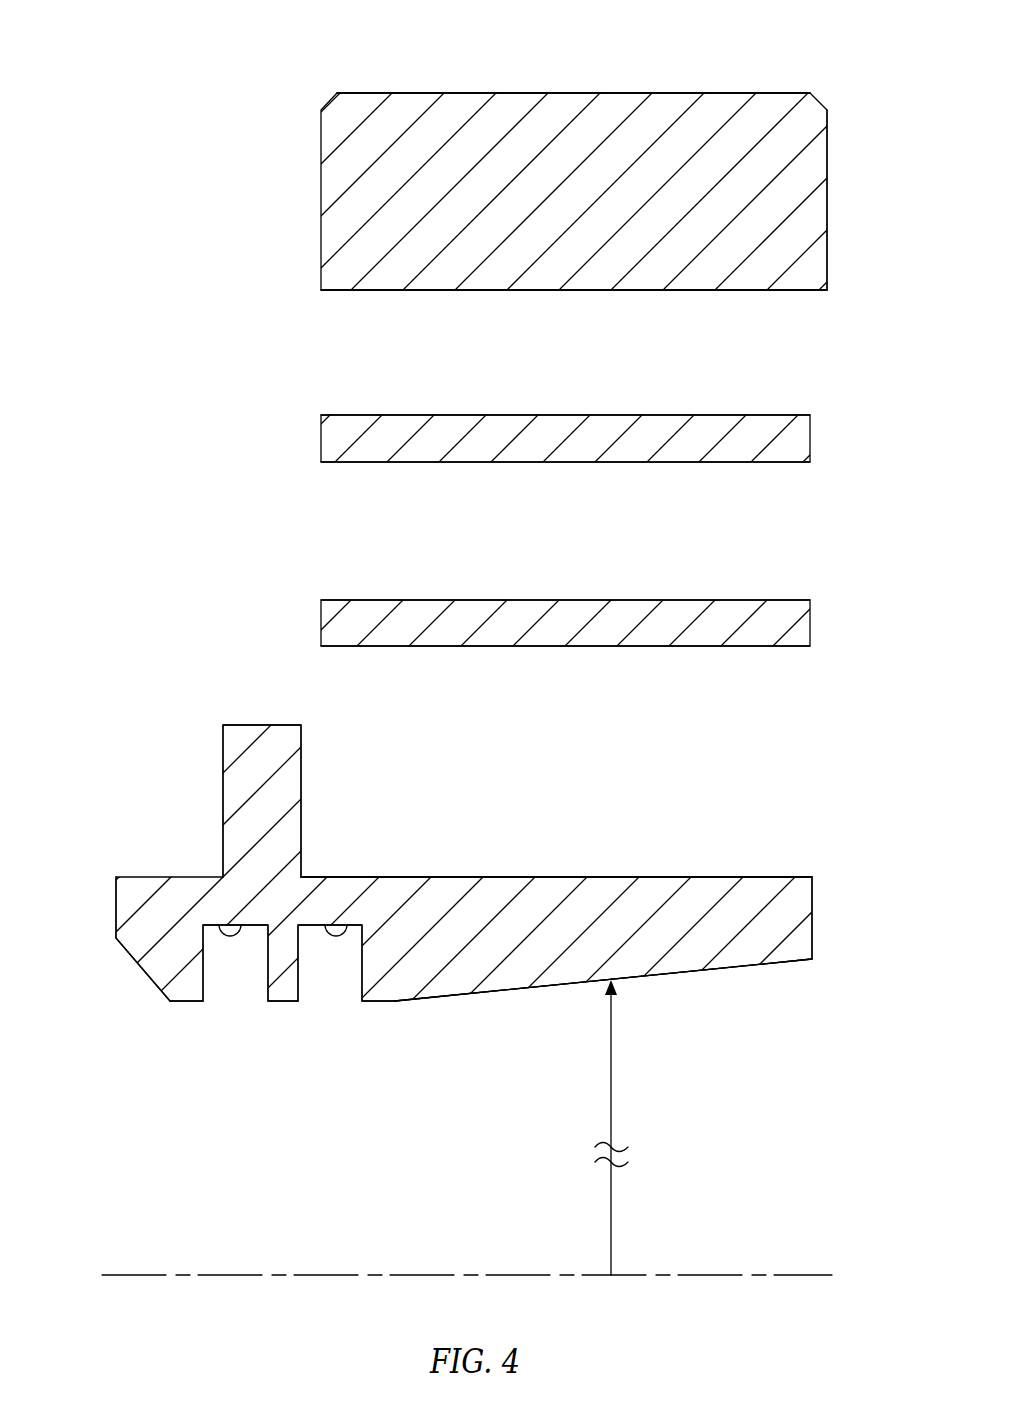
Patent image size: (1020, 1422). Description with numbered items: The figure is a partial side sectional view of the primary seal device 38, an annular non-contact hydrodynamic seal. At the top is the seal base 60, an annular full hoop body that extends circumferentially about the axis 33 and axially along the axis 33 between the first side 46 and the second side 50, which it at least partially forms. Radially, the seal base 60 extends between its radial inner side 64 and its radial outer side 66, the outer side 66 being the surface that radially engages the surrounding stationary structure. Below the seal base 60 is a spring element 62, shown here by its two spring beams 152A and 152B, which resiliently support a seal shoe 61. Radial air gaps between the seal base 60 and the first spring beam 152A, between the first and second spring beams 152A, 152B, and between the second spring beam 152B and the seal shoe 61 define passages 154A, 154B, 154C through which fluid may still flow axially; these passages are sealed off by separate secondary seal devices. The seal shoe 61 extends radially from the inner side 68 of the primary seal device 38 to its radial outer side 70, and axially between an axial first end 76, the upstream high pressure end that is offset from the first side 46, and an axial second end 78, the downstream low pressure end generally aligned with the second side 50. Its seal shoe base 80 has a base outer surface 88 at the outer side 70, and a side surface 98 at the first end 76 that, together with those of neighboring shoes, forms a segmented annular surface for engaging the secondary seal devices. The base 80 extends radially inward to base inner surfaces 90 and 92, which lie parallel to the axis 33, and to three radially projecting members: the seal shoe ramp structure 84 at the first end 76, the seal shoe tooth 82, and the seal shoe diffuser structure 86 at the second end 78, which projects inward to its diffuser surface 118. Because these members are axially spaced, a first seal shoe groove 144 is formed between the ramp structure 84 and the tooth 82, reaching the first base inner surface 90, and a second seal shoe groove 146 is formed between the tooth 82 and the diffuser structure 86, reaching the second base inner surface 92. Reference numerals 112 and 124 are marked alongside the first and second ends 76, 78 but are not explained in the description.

The primary seal device 38 is at (579, 185).
The first side 46 is at (321, 190).
The second side 50 is at (827, 165).
The seal base 60 is at (625, 78).
The radial inner side 64 is at (455, 290).
The radial outer side 66 is at (532, 93).
The spring element 62 is at (826, 408).
The first spring beam 152A is at (321, 438).
The second spring beam 152B is at (321, 624).
The first passage 154A is at (548, 356).
The second passage 154B is at (548, 536).
The third passage 154C is at (548, 699).
The seal shoe base 80 is at (400, 858).
The side surface 98 is at (227, 785).
The radial outer side 70 is at (556, 832).
The base outer surface 88 is at (539, 877).
The axial first end 76 is at (75, 885).
The forward face 112 is at (116, 919).
The axial second end 78 is at (866, 889).
The aft face 124 is at (812, 893).
The first base inner surface 90 is at (226, 930).
The second base inner surface 92 is at (345, 932).
The first seal shoe groove 144 is at (215, 988).
The second seal shoe groove 146 is at (312, 988).
The seal shoe 61 is at (148, 1001).
The seal shoe ramp structure 84 is at (163, 1024).
The seal shoe tooth 82 is at (263, 1024).
The inner side 68 is at (355, 1033).
The seal shoe diffuser structure 86 is at (478, 1022).
The diffuser surface 118 is at (662, 973).
The axis 33 is at (469, 1230).